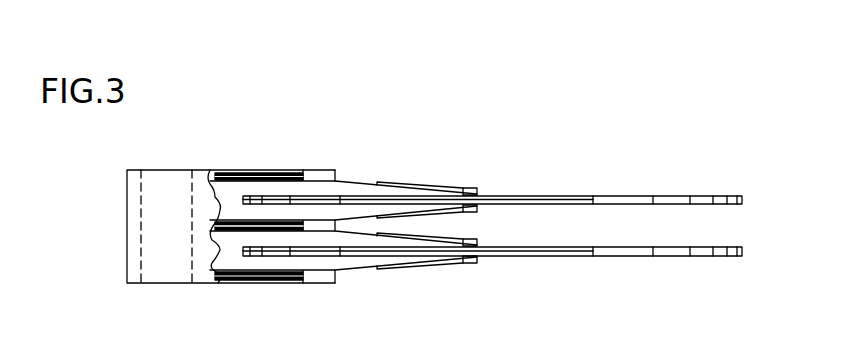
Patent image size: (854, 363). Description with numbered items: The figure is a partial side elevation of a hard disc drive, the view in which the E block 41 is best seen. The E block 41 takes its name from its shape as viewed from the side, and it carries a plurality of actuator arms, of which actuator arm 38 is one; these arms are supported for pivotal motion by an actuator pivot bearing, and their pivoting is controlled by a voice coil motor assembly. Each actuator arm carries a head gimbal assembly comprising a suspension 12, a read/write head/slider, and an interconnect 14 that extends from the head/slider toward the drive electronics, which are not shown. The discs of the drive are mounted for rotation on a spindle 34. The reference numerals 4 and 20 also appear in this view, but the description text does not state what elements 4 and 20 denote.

The cable 4 is at (222, 222).
The suspension 12 is at (358, 183).
The interconnect 14 is at (283, 226).
The housing 20 is at (234, 168).
The spindle 34 is at (480, 192).
The actuator arm 38 is at (280, 176).
The E block 41 is at (396, 116).